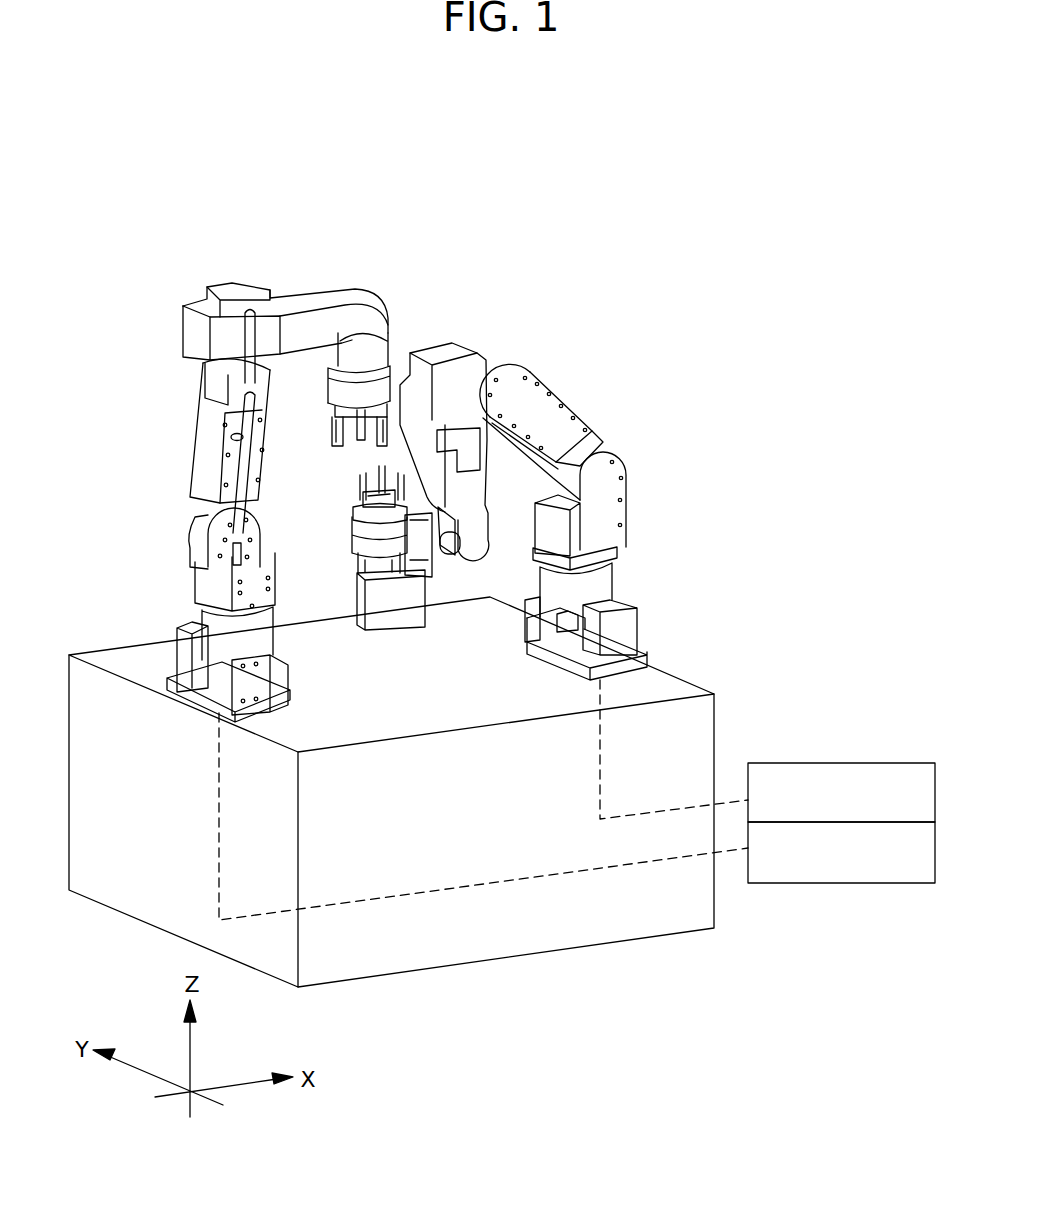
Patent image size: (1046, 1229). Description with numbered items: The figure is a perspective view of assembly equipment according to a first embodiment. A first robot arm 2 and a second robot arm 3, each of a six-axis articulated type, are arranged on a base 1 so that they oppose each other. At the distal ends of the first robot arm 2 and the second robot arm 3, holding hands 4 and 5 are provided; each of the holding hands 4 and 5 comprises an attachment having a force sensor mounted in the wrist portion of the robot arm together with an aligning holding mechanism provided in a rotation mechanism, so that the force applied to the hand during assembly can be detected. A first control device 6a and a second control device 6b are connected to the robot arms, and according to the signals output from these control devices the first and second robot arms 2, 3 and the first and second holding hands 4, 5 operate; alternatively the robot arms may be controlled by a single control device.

The base 1 is at (683, 728).
The first robot arm 2 is at (572, 378).
The second robot arm 3 is at (155, 372).
The holding hand 4 is at (420, 520).
The holding hand 5 is at (392, 395).
The first control device 6a is at (872, 763).
The second control device 6b is at (870, 883).